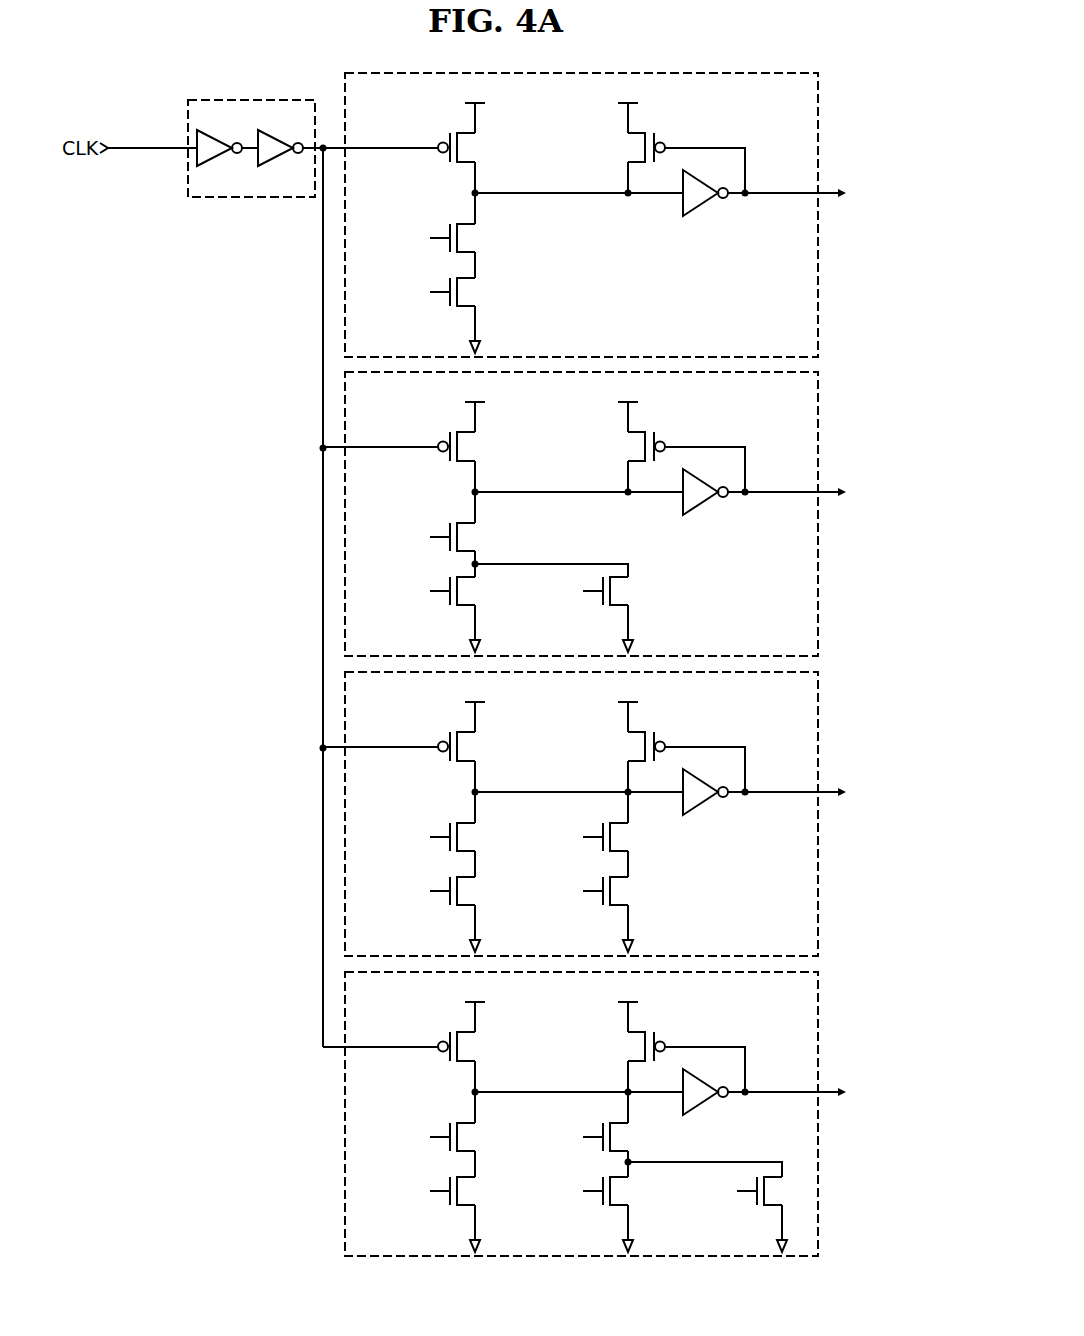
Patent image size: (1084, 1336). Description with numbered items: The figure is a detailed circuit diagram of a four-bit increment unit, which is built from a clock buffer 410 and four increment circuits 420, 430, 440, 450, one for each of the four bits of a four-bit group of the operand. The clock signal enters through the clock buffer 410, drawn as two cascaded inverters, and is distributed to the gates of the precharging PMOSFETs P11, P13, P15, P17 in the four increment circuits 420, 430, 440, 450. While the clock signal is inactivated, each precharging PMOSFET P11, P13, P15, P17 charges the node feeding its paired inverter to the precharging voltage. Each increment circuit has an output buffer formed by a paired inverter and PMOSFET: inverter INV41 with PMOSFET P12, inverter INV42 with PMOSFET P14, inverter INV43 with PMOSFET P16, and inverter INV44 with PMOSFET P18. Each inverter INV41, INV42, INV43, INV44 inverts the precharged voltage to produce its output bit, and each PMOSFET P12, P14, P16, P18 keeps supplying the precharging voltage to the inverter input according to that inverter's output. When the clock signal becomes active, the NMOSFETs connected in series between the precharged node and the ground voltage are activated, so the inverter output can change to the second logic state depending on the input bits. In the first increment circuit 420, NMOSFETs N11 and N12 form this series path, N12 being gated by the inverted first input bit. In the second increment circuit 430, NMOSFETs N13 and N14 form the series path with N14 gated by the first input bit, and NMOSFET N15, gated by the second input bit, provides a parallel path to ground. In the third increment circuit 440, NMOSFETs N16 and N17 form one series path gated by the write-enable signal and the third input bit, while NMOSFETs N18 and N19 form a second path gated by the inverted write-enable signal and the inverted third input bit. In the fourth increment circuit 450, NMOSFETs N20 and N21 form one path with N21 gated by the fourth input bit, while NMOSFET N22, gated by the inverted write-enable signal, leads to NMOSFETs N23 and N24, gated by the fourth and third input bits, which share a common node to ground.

The clock buffer 410 is at (257, 98).
The increment circuit 420 is at (818, 122).
The increment circuit 430 is at (818, 415).
The increment circuit 440 is at (818, 715).
The increment circuit 450 is at (818, 1017).
The PMOSFET P11 is at (477, 147).
The PMOSFET P12 is at (674, 163).
The PMOSFET P13 is at (477, 446).
The PMOSFET P14 is at (674, 462).
The PMOSFET P15 is at (477, 746).
The PMOSFET P16 is at (674, 762).
The PMOSFET P17 is at (477, 1046).
The PMOSFET P18 is at (674, 1062).
The NMOSFET N11 is at (474, 238).
The NMOSFET N12 is at (474, 292).
The NMOSFET N13 is at (474, 537).
The NMOSFET N14 is at (474, 591).
The NMOSFET N15 is at (627, 591).
The NMOSFET N16 is at (474, 837).
The NMOSFET N17 is at (474, 891).
The NMOSFET N18 is at (627, 837).
The NMOSFET N19 is at (627, 891).
The NMOSFET N20 is at (474, 1137).
The NMOSFET N21 is at (474, 1191).
The NMOSFET N22 is at (627, 1137).
The NMOSFET N23 is at (627, 1191).
The NMOSFET N24 is at (781, 1191).
The inverter INV41 is at (700, 208).
The inverter INV42 is at (700, 507).
The inverter INV43 is at (700, 807).
The inverter INV44 is at (700, 1107).